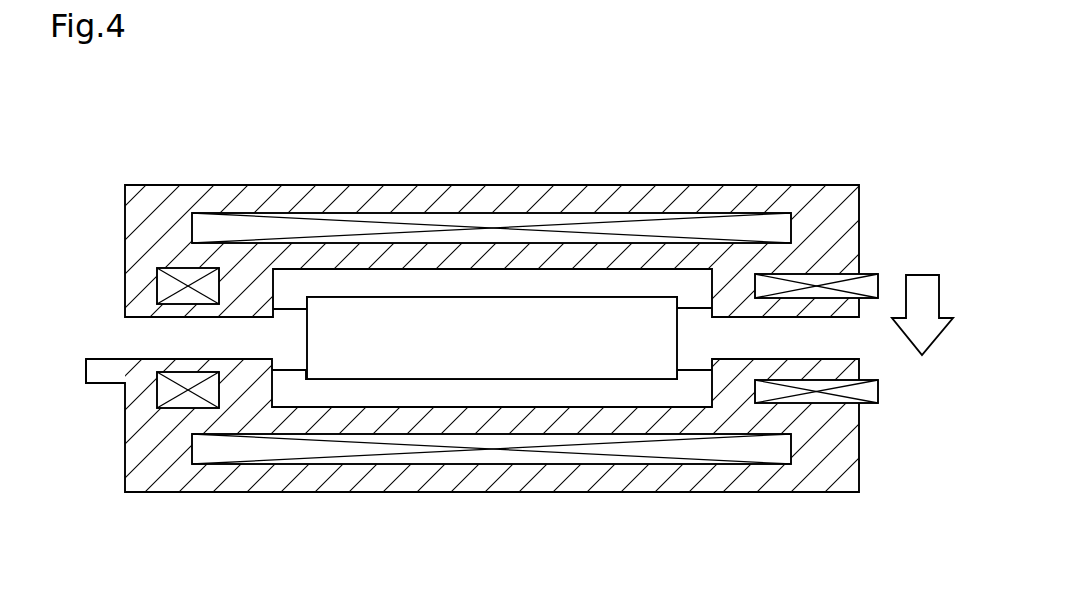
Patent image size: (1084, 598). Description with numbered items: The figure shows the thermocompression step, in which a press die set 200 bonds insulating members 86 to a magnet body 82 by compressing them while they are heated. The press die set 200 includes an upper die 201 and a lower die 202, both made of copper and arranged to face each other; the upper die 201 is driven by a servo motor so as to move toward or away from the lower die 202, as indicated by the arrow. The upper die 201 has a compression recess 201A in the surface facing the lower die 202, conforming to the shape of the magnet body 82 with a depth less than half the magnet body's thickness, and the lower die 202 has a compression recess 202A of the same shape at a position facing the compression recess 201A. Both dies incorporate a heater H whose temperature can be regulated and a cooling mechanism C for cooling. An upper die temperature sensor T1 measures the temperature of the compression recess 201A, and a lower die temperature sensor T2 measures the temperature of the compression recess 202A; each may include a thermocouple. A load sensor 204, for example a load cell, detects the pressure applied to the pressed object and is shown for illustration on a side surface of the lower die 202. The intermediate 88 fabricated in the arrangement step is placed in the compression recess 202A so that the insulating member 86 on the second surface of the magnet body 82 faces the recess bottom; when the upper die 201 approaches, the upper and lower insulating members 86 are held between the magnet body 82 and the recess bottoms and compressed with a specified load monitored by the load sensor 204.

The press die set 200 is at (542, 349).
The upper die 201 is at (805, 185).
The lower die 202 is at (800, 493).
The load sensor 204 is at (86, 364).
The compression recess 201A is at (426, 272).
The compression recess 202A is at (361, 402).
The insulating member 86 is at (530, 285).
The intermediate 88 is at (281, 338).
The magnet body 82 is at (678, 328).
The heater H is at (249, 228).
The cooling mechanism C is at (165, 277).
The upper die temperature sensor T1 is at (865, 274).
The lower die temperature sensor T2 is at (880, 395).